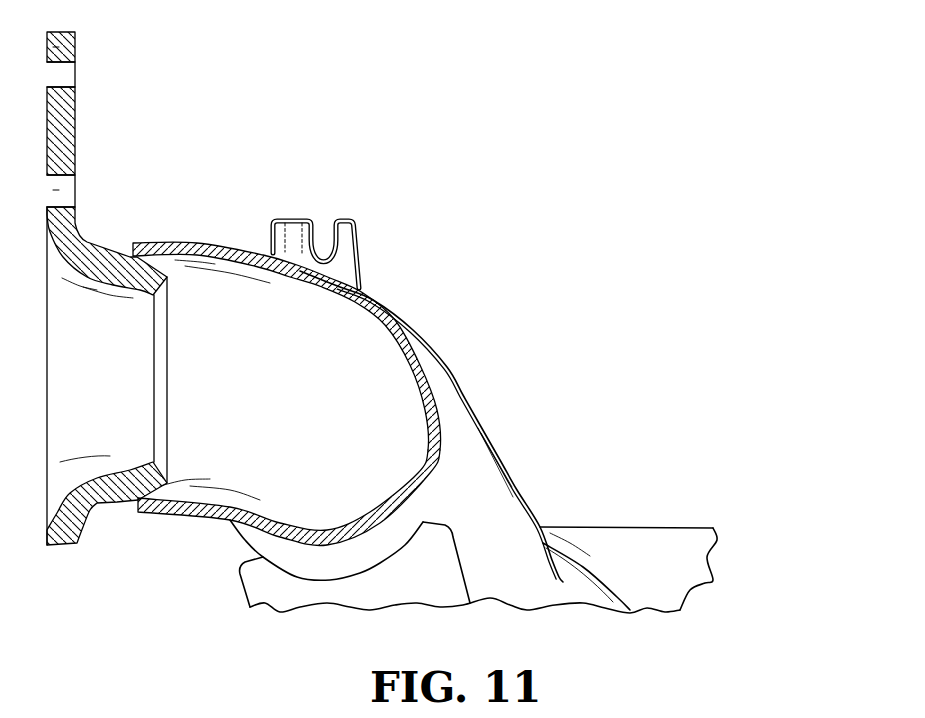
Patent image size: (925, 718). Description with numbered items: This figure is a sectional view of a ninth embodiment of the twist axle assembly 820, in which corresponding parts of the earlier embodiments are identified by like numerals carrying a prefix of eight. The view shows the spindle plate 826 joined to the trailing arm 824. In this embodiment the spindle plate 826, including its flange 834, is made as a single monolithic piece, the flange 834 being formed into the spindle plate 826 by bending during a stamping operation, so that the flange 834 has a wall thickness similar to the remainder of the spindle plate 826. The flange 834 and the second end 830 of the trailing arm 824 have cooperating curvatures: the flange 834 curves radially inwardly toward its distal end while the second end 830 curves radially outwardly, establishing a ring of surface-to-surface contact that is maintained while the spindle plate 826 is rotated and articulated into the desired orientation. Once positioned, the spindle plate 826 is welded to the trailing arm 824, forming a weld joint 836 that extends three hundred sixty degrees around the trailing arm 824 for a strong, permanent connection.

The twist axle assembly 820 is at (424, 394).
The trailing arm 824 is at (500, 431).
The spindle plate 826 is at (77, 117).
The second end 830 is at (160, 512).
The flange 834 is at (90, 508).
The weld joint 836 is at (132, 242).